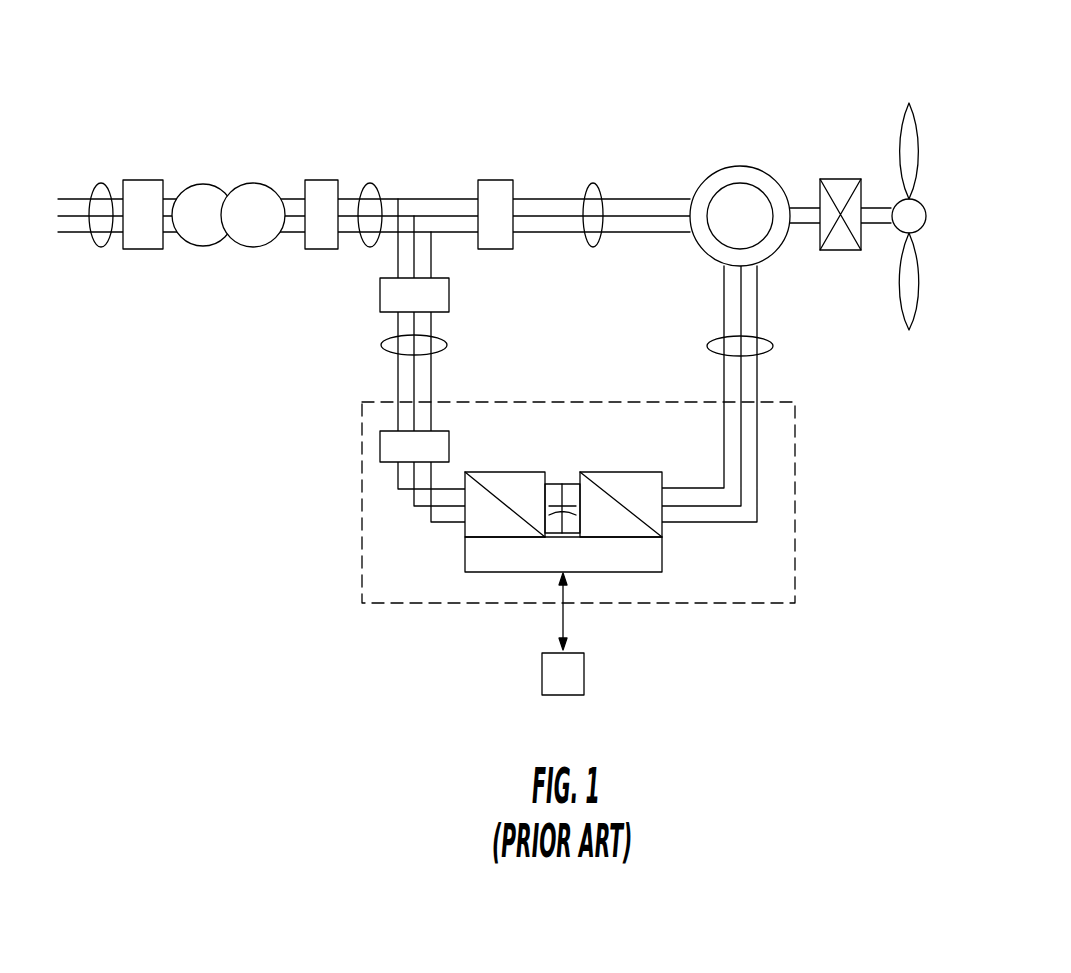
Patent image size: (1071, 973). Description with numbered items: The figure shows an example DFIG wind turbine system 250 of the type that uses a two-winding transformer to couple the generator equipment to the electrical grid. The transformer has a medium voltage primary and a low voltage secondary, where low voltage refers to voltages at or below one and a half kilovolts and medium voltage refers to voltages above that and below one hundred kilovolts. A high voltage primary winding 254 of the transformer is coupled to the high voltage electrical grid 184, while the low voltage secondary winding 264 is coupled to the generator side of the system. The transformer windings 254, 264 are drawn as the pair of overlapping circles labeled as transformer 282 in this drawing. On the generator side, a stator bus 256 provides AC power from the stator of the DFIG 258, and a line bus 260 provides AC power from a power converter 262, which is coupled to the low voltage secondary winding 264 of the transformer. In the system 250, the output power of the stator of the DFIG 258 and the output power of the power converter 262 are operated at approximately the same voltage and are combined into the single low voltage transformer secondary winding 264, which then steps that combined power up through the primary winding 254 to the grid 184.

The DFIG system 250 is at (491, 353).
The high voltage electrical grid 184 is at (100, 183).
The transformer 282 is at (232, 219).
The high voltage primary winding 254 is at (203, 247).
The low voltage secondary winding 264 is at (253, 247).
The stator bus 256 is at (593, 183).
The DFIG 258 is at (740, 166).
The line bus 260 is at (381, 345).
The power converter 262 is at (800, 477).